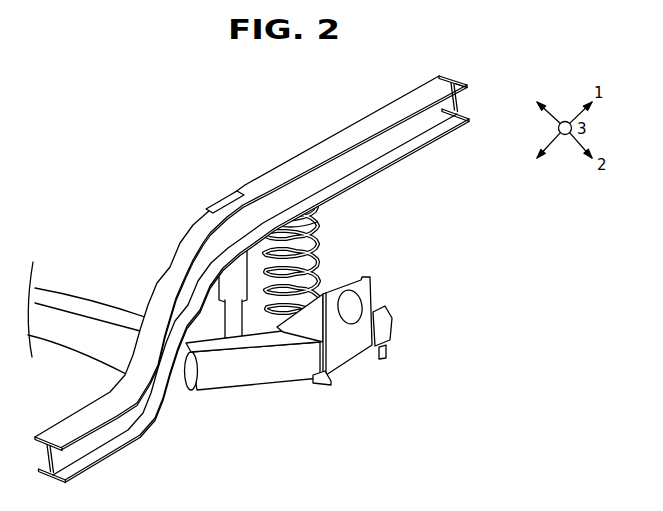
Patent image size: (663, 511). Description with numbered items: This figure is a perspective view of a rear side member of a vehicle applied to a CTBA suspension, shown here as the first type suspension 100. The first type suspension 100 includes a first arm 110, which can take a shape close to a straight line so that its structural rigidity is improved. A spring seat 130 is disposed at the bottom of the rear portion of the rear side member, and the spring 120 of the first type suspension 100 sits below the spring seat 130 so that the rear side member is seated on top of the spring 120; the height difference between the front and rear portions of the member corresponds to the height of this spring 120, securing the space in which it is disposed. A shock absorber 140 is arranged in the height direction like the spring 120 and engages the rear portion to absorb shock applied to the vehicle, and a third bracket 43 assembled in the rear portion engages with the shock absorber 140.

The third bracket 43 is at (222, 195).
The first type suspension 100 is at (402, 335).
The first arm 110 is at (233, 372).
The spring 120 is at (318, 252).
The spring seat 130 is at (317, 224).
The shock absorber 140 is at (232, 284).